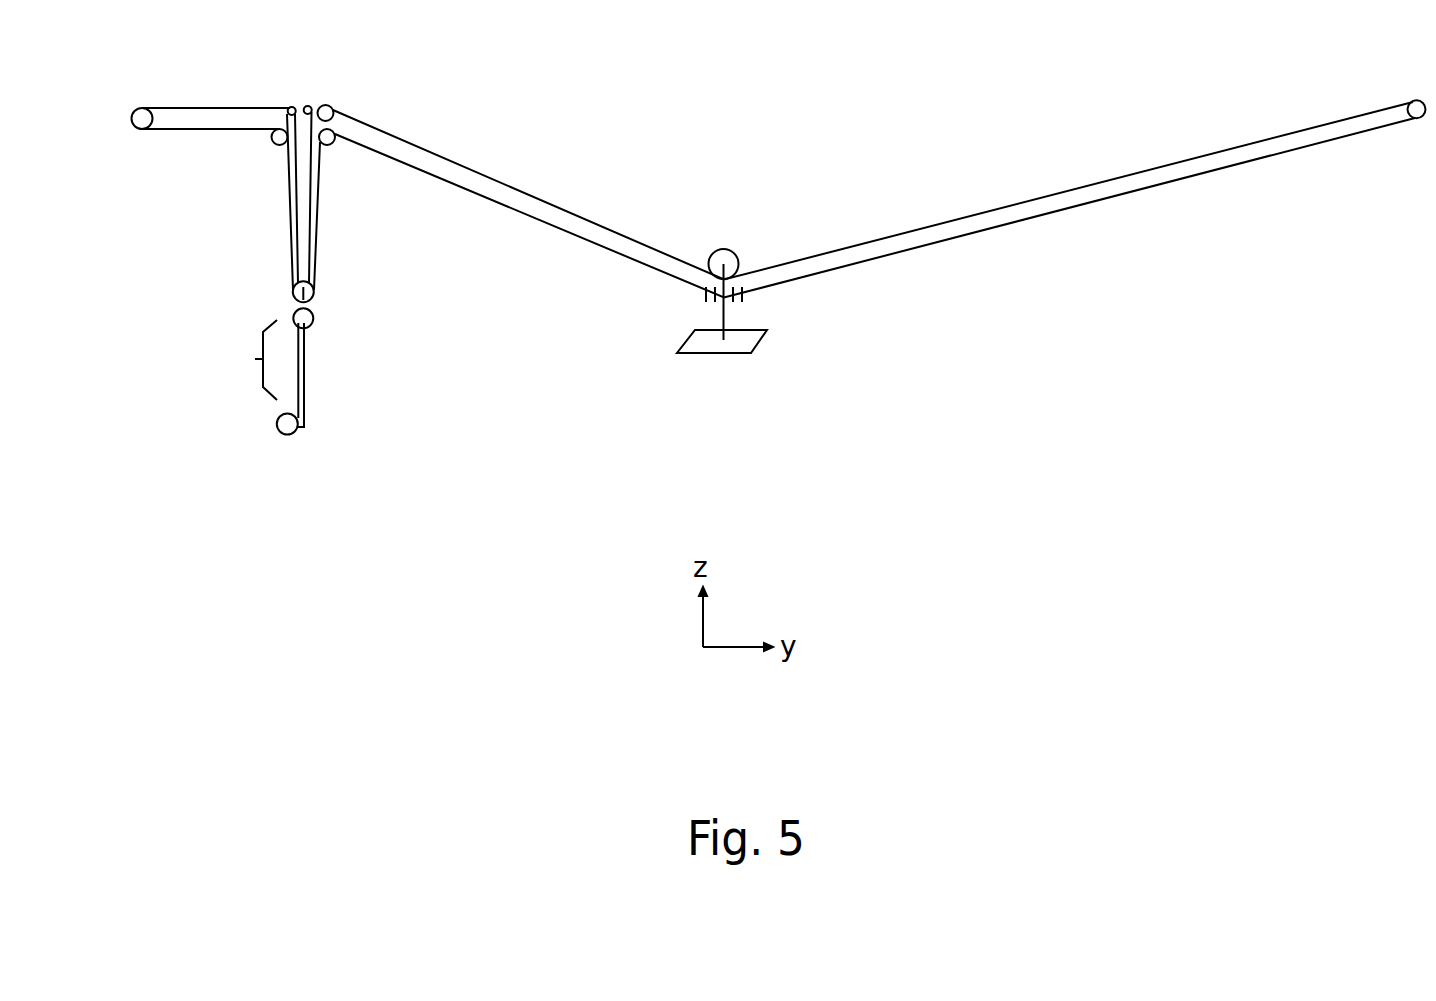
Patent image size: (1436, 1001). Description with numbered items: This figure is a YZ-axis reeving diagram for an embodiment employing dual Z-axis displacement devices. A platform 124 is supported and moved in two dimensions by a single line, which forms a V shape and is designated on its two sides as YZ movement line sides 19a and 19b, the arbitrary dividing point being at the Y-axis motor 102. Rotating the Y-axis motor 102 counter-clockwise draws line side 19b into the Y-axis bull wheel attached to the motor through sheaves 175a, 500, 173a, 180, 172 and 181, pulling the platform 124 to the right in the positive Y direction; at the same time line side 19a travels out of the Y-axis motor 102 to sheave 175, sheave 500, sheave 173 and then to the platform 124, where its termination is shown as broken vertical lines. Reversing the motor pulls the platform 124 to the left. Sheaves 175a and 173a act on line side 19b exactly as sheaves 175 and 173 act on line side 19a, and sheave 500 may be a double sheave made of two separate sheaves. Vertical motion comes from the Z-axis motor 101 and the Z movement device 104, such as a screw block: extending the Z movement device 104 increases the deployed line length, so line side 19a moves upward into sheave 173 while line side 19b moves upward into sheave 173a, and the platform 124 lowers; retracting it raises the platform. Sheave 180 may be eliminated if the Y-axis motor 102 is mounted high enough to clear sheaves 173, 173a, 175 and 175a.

The Y-axis motor 102 is at (142, 102).
The YZ movement line side 19b is at (203, 102).
The YZ movement line side 19a is at (180, 137).
The sheave 175a is at (291, 104).
The sheave 173a is at (308, 103).
The sheave 180 is at (334, 107).
The sheave 175 is at (275, 146).
The sheave 173 is at (330, 150).
The sheave 500 is at (281, 288).
The Z movement device 104 is at (258, 367).
The Z-axis motor 101 is at (273, 420).
The sheave 172 is at (718, 243).
The platform 124 is at (780, 343).
The sheave 181 is at (1408, 93).